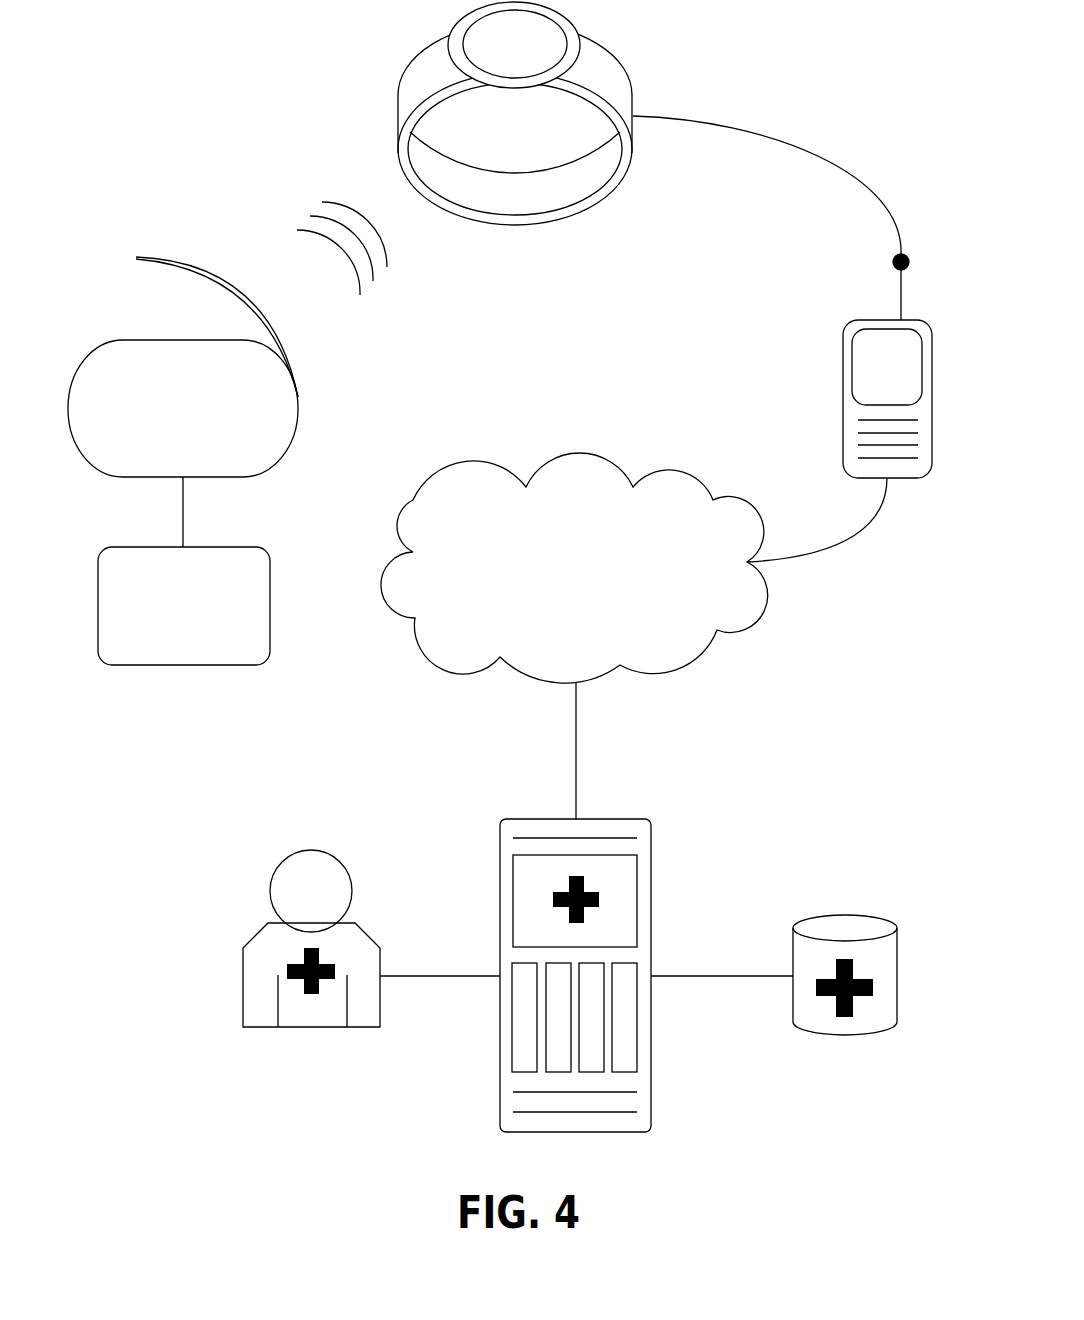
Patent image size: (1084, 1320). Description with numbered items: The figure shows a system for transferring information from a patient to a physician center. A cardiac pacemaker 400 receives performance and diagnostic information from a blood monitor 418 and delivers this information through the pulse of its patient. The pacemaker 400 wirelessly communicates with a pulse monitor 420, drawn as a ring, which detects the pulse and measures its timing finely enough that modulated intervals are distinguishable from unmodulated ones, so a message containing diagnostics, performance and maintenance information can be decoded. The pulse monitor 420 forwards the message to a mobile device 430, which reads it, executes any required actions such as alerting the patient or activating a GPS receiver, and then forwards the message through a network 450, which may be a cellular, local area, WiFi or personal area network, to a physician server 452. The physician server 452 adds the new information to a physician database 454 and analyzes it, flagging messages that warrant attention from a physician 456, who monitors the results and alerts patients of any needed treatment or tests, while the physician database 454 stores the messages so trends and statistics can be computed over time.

The cardiac pacemaker 400 is at (183, 340).
The blood monitor 418 is at (182, 665).
The pulse monitor 420 is at (577, 218).
The mobile device 430 is at (842, 385).
The network 450 is at (598, 455).
The physician server 452 is at (651, 897).
The physician database 454 is at (847, 1035).
The physician 456 is at (257, 937).